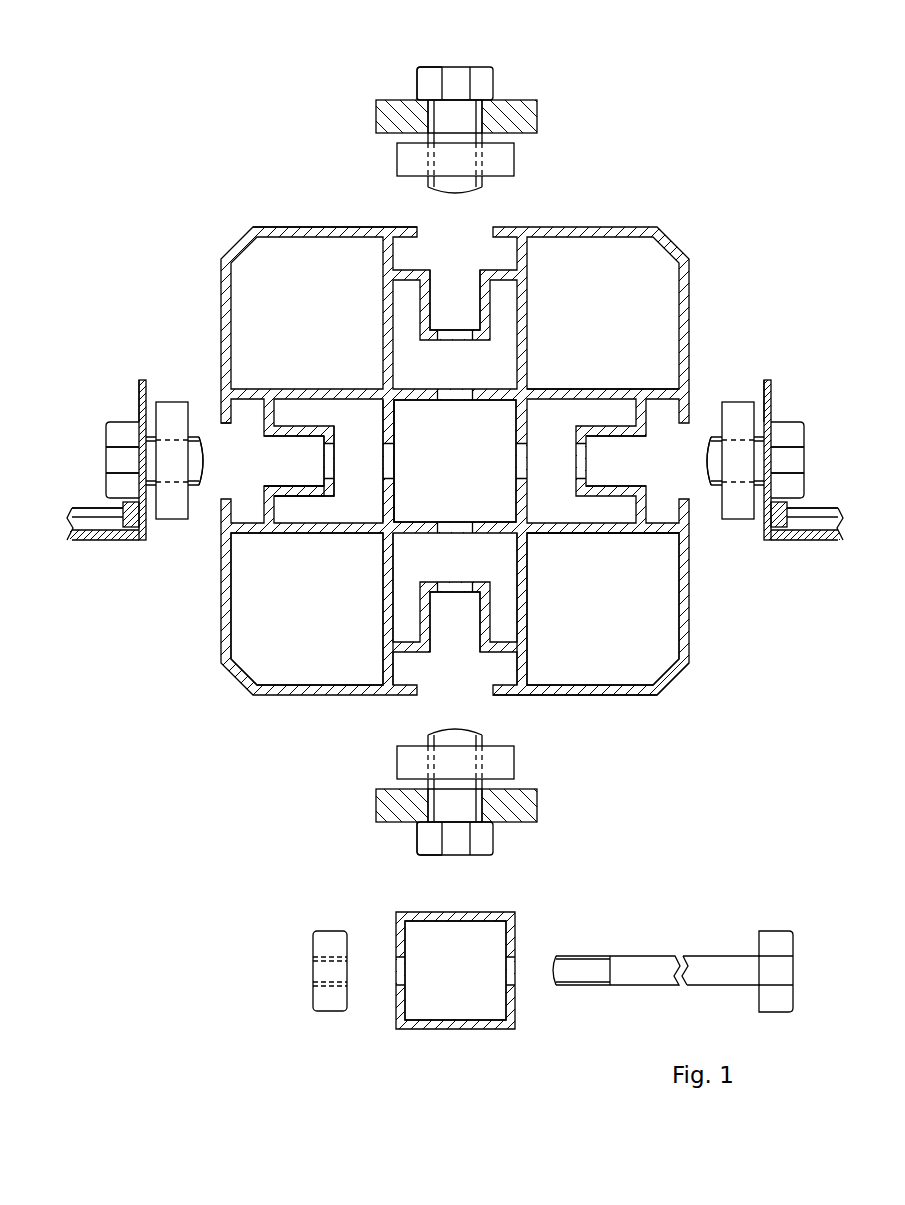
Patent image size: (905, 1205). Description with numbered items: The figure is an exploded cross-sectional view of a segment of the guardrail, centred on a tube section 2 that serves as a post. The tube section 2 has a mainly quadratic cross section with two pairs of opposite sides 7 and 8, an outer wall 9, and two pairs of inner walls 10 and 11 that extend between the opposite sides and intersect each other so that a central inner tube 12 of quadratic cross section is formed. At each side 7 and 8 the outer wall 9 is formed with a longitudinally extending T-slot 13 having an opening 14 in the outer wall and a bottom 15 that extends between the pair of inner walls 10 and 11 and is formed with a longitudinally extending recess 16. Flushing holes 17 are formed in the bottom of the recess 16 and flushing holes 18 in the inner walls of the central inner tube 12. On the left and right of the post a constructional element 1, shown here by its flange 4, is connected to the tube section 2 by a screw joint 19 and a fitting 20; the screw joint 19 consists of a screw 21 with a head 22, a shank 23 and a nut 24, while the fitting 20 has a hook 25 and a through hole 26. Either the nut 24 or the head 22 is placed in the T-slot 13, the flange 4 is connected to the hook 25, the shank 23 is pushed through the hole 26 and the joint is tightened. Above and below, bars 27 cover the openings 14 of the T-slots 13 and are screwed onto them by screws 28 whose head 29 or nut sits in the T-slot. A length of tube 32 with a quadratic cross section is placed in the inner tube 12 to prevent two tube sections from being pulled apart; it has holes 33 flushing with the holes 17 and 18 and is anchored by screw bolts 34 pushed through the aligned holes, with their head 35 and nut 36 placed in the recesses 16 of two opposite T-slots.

The constructional element 1 is at (87, 546).
The tube section 2 is at (599, 192).
The flange 4 is at (148, 527).
The side 7 is at (230, 625).
The side 8 is at (533, 228).
The outer wall 9 is at (612, 686).
The inner wall 10 is at (388, 605).
The inner wall 11 is at (583, 392).
The central inner tube 12 is at (440, 474).
The T-slot 13 is at (440, 281).
The opening 14 is at (219, 441).
The bottom 15 is at (270, 530).
The longitudinally extending recess 16 is at (312, 486).
The flushing hole 17 is at (336, 465).
The flushing hole 18 is at (392, 462).
The screw joint 19 is at (108, 435).
The fitting 20 is at (146, 382).
The screw 21 is at (107, 478).
The head 22 is at (107, 452).
The shank 23 is at (207, 462).
The nut 24 is at (183, 402).
The hook 25 is at (125, 512).
The through hole 26 is at (140, 430).
The bar 27 is at (515, 100).
The screw 28 is at (455, 70).
The head 29 is at (428, 70).
The tube 32 is at (418, 1030).
The hole 33 is at (505, 970).
The screw bolt 34 is at (655, 982).
The head 35 is at (794, 985).
The nut 36 is at (322, 1005).